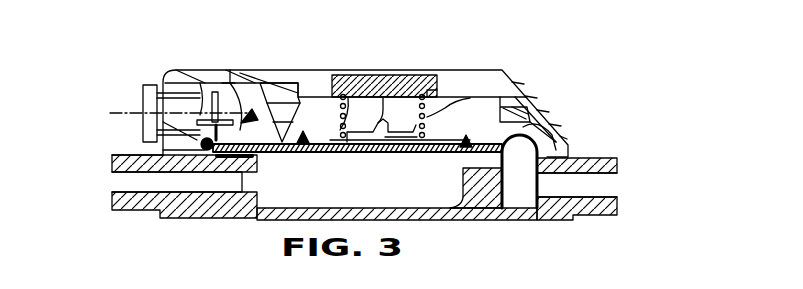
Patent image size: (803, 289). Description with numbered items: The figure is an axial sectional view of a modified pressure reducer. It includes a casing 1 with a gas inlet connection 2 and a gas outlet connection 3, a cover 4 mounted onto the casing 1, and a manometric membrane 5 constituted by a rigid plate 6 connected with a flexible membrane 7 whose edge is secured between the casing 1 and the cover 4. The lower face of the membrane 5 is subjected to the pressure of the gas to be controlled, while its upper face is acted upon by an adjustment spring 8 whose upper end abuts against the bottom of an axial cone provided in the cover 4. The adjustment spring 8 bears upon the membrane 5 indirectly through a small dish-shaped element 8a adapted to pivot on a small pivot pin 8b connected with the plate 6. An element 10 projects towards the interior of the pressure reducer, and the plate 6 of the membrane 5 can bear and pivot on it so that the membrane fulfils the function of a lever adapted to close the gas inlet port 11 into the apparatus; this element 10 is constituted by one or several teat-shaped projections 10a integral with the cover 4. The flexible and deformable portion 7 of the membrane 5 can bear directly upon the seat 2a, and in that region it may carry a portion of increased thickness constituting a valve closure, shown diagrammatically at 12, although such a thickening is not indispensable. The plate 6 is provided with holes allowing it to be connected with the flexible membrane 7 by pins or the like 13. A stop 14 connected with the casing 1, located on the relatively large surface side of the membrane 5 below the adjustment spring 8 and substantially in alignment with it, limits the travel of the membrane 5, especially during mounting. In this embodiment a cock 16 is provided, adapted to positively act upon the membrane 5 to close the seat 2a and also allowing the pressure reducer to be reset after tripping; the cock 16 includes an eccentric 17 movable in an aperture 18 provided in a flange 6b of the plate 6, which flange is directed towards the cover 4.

The casing 1 is at (437, 214).
The gas inlet connection 2 is at (128, 190).
The seat 2a is at (133, 147).
The gas outlet connection 3 is at (617, 190).
The cover 4 is at (290, 70).
The manometric membrane 5 is at (287, 165).
The rigid plate 6 is at (368, 72).
The flange 6b is at (218, 72).
The flexible membrane 7 is at (563, 118).
The adjustment spring 8 is at (442, 72).
The small dish-shaped element 8a is at (401, 74).
The small pivot pin 8b is at (472, 72).
The element 10 is at (250, 108).
The teat-shaped projections 10a is at (329, 72).
The gas inlet port 11 is at (219, 175).
The portion of increased thickness 12 is at (143, 110).
The pins 13 is at (500, 103).
The stop 14 is at (484, 190).
The cock 16 is at (145, 128).
The eccentric 17 is at (216, 91).
The aperture 18 is at (197, 72).